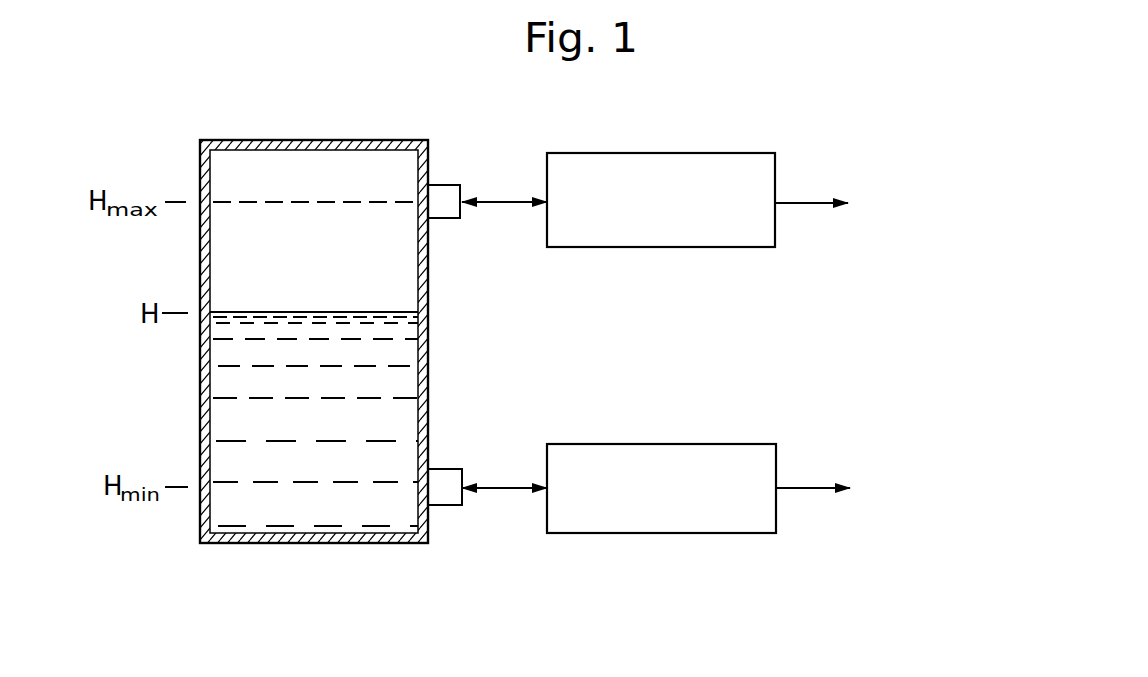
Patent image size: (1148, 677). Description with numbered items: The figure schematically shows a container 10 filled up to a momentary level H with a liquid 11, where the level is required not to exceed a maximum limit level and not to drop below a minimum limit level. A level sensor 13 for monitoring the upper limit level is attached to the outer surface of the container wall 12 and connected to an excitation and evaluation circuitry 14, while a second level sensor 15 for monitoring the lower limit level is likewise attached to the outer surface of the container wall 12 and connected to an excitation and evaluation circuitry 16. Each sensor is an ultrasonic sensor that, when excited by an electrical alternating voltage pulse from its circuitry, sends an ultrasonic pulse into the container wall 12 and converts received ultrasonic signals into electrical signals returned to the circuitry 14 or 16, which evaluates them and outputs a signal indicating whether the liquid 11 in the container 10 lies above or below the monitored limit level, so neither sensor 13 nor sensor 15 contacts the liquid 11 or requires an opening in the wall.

The container 10 is at (287, 140).
The liquid 11 is at (372, 312).
The container wall 12 is at (428, 378).
The level sensor 13 is at (442, 190).
The excitation and evaluation circuitry 14 is at (735, 153).
The level sensor 15 is at (450, 497).
The excitation and evaluation circuitry 16 is at (752, 533).